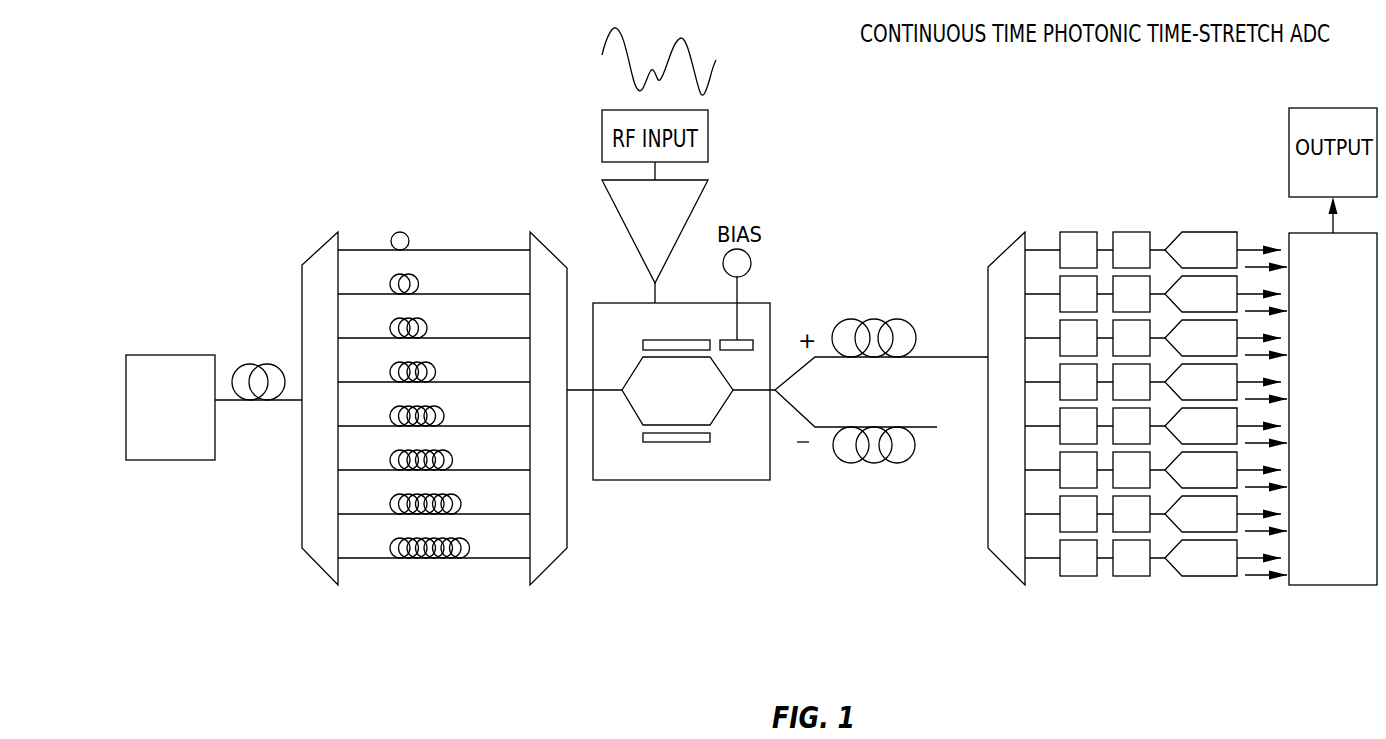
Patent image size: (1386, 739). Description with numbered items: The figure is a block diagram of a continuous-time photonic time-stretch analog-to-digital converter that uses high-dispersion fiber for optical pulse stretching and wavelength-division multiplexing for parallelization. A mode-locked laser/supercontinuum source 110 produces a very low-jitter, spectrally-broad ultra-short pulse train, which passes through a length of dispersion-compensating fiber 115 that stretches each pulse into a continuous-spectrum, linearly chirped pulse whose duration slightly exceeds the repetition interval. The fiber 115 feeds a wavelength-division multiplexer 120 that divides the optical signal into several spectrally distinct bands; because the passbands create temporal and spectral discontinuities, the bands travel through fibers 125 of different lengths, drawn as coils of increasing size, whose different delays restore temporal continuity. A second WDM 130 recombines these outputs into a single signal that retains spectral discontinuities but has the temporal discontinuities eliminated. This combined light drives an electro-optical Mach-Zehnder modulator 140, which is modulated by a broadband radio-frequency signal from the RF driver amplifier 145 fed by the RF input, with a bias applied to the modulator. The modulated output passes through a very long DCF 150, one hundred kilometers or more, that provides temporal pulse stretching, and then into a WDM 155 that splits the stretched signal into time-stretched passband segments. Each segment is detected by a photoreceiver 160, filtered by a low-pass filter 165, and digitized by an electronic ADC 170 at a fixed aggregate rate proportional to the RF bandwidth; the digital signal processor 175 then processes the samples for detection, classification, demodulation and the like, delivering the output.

The mode-locked laser/supercontinuum source 110 is at (186, 453).
The dispersion-compensating fiber 115 is at (258, 402).
The wavelength-division multiplexer 120 is at (318, 568).
The fibers 125 is at (446, 584).
The WDM 130 is at (550, 568).
The Mach-Zehnder modulator 140 is at (692, 480).
The RF driver amplifier 145 is at (672, 250).
The DCF 150 is at (928, 357).
The WDM 155 is at (998, 558).
The photoreceivers 160 is at (1081, 593).
The low-pass filters 165 is at (1138, 595).
The electronic ADCs 170 is at (1208, 595).
The digital signal processor 175 is at (1350, 410).